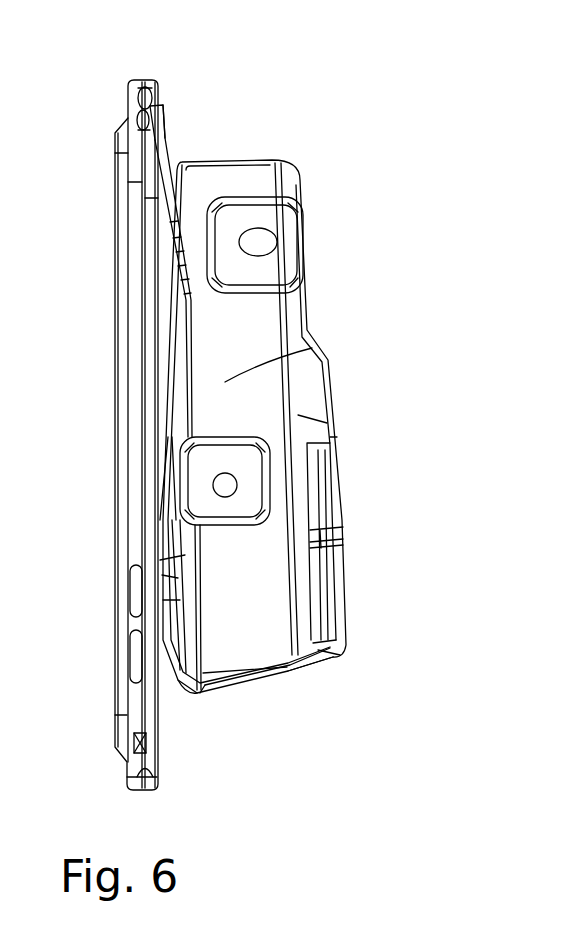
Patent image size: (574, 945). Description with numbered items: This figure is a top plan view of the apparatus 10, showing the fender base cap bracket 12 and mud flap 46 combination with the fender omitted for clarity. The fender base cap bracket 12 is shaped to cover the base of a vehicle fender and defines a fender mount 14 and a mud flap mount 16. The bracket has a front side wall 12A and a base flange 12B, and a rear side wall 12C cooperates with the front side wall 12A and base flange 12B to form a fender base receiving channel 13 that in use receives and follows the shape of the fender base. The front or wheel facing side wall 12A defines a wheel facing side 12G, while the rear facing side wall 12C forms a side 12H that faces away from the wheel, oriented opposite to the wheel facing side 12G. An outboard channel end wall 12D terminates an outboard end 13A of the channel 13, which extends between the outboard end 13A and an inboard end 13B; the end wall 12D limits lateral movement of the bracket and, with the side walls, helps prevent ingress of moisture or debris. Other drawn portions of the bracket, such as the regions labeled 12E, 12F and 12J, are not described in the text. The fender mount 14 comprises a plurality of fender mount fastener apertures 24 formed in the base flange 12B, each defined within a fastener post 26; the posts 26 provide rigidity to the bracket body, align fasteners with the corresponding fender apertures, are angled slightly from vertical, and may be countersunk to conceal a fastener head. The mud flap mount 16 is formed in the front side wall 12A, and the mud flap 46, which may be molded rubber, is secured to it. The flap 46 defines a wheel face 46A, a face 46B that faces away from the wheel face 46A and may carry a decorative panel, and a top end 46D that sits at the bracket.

The apparatus 10 is at (340, 30).
The fender base cap bracket 12 is at (245, 340).
The front side wall 12A is at (168, 552).
The base flange 12B is at (225, 382).
The rear side wall 12C is at (338, 465).
The outboard channel end wall 12D is at (268, 687).
The bracket bottom corner 12E is at (230, 683).
The bracket top portion 12F is at (228, 165).
The wheel facing side 12G is at (165, 293).
The side facing away from the wheel 12H is at (348, 540).
The bracket bottom right corner 12J is at (322, 668).
The fender base receiving channel 13 is at (243, 629).
The outboard end 13A is at (296, 688).
The inboard end 13B is at (206, 182).
The fender mount 14 is at (177, 587).
The mud flap mount 16 is at (170, 135).
The fender mount fastener apertures 24 is at (262, 251).
The fastener posts 26 is at (282, 216).
The mud flap 46 is at (115, 570).
The wheel face 46A is at (120, 537).
The face facing away from the wheel face 46B is at (160, 718).
The top end 46D is at (134, 197).